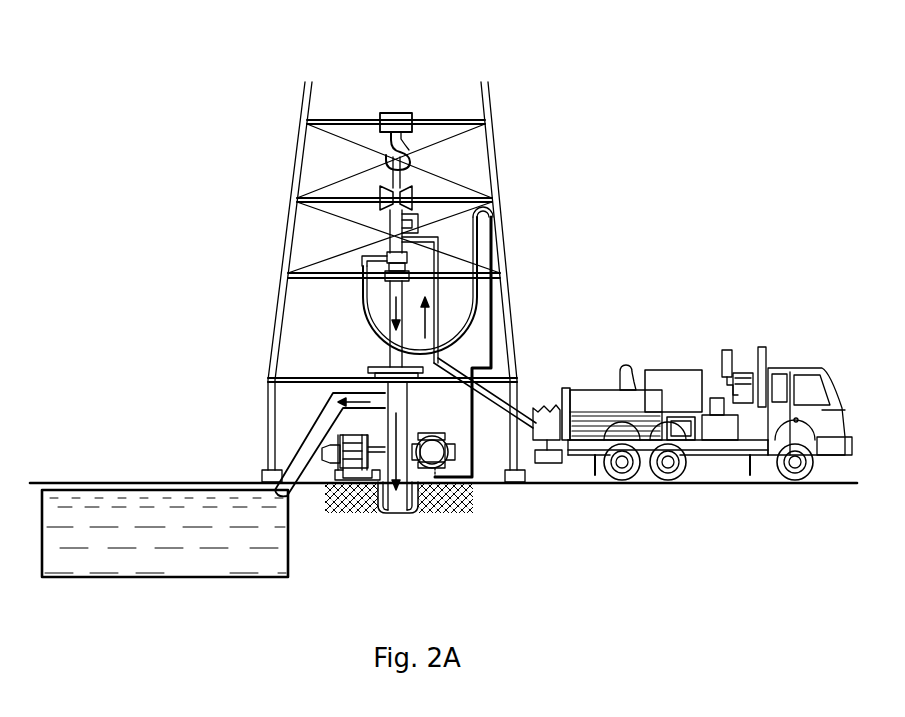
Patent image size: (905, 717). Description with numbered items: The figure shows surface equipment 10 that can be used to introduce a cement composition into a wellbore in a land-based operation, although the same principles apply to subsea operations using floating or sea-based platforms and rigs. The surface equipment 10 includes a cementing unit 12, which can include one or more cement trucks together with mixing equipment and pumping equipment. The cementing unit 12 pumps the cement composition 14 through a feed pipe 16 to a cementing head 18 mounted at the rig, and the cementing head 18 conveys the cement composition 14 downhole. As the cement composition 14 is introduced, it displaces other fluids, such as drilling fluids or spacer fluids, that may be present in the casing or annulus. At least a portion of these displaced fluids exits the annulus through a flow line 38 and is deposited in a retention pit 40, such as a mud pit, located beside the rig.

The surface equipment 10 is at (627, 132).
The cementing unit 12 is at (715, 462).
The cement composition 14 is at (390, 310).
The feed pipe 16 is at (490, 387).
The cementing head 18 is at (432, 185).
The flow line 38 is at (308, 432).
The retention pit 40 is at (172, 578).